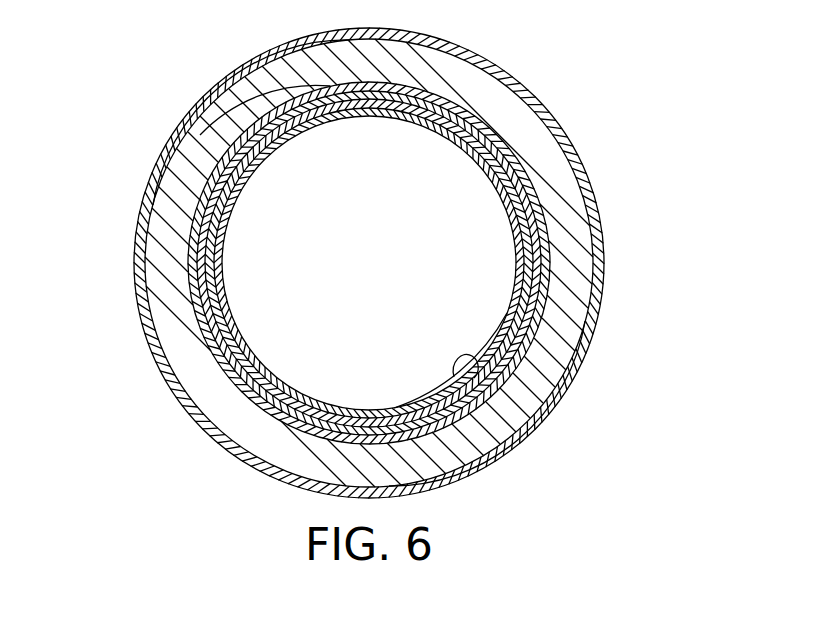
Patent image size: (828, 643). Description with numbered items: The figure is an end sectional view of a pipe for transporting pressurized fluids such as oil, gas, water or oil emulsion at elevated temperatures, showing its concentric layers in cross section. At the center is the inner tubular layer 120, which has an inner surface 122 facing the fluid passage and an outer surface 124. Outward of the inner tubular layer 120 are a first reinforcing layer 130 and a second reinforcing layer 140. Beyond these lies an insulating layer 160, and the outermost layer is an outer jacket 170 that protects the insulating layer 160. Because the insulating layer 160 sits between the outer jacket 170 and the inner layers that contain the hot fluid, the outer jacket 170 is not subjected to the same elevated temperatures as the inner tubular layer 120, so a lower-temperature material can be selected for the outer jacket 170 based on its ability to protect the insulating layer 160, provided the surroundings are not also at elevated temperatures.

The inner tubular layer 120 is at (522, 303).
The inner surface 122 is at (520, 433).
The outer surface 124 is at (540, 372).
The first reinforcing layer 130 is at (537, 268).
The second reinforcing layer 140 is at (540, 207).
The insulating layer 160 is at (175, 168).
The outer jacket 170 is at (133, 254).